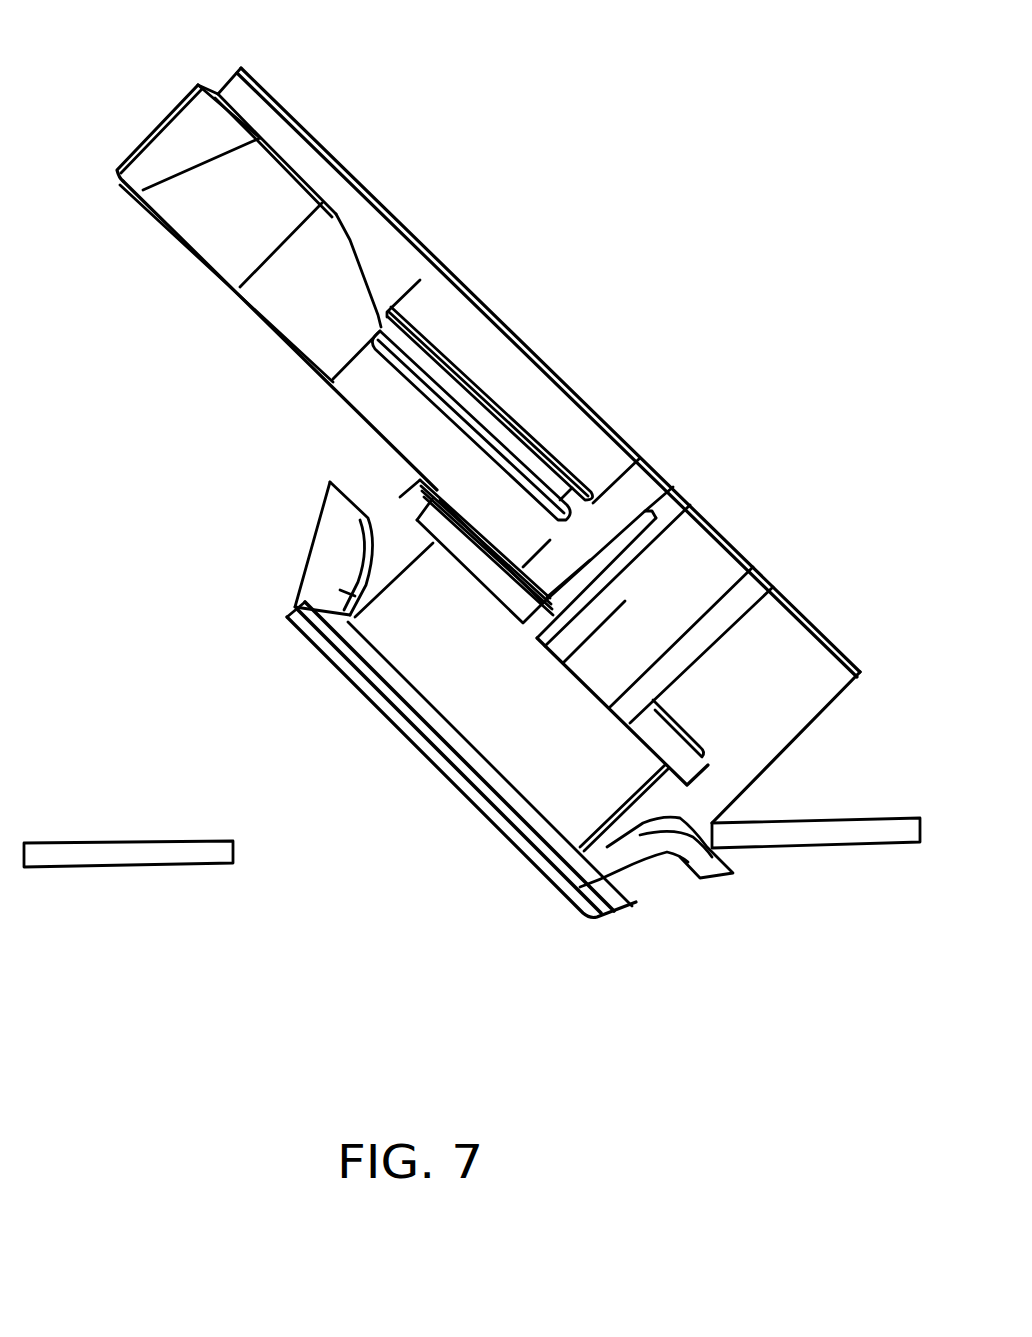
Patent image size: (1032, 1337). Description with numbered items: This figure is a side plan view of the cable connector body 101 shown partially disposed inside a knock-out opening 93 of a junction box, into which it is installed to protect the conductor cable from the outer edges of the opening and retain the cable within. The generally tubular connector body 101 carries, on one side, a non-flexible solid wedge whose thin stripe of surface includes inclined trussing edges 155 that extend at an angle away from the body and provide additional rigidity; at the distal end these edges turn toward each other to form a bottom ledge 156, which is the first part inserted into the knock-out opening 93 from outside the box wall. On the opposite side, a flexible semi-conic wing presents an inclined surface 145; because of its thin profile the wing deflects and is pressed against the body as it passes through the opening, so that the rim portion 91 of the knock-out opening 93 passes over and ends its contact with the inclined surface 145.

The cable connector body 101 is at (685, 171).
The inclined surface 145 is at (318, 528).
The trussing edge 155 is at (645, 860).
The bottom ledge 156 is at (708, 866).
The rim portion 91 is at (233, 853).
The knock-out opening 93 is at (287, 835).